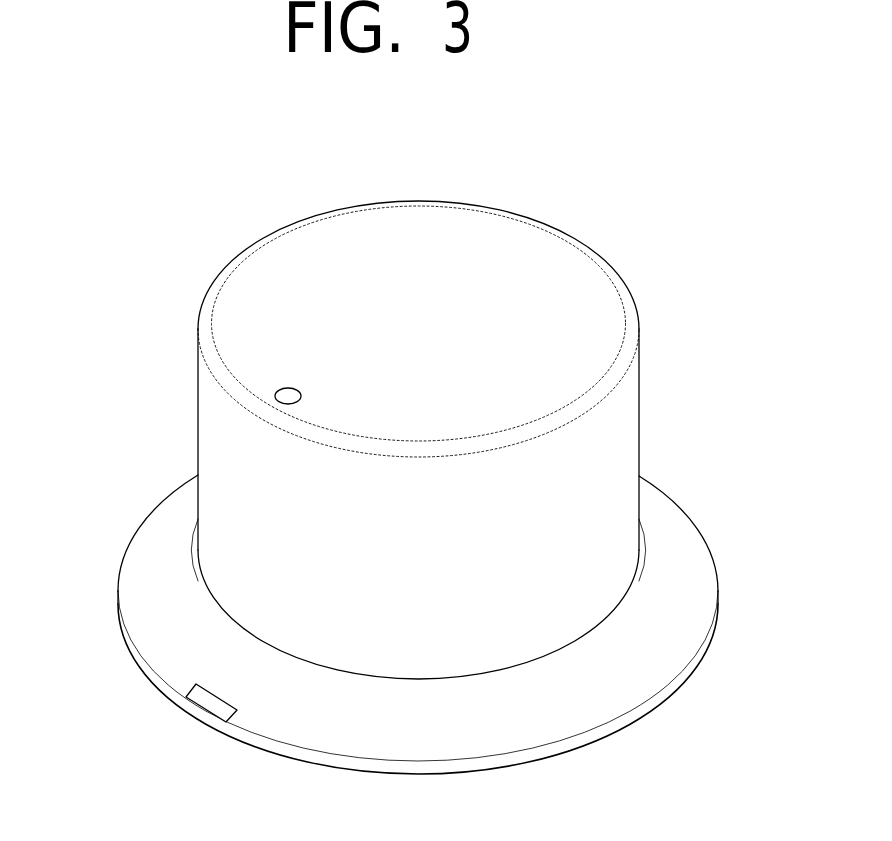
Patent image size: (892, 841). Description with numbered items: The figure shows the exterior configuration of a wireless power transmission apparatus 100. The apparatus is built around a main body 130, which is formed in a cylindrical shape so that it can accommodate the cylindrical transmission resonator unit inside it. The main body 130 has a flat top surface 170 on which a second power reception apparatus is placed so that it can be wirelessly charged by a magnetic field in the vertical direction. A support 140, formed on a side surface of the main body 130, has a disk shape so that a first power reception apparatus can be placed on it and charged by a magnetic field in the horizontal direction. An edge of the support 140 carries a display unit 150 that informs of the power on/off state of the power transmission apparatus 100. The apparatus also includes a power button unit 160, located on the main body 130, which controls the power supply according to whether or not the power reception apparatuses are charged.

The power transmission apparatus 100 is at (455, 133).
The main body 130 is at (623, 423).
The support 140 is at (687, 543).
The display unit 150 is at (207, 700).
The power button unit 160 is at (284, 389).
The top surface 170 is at (502, 228).